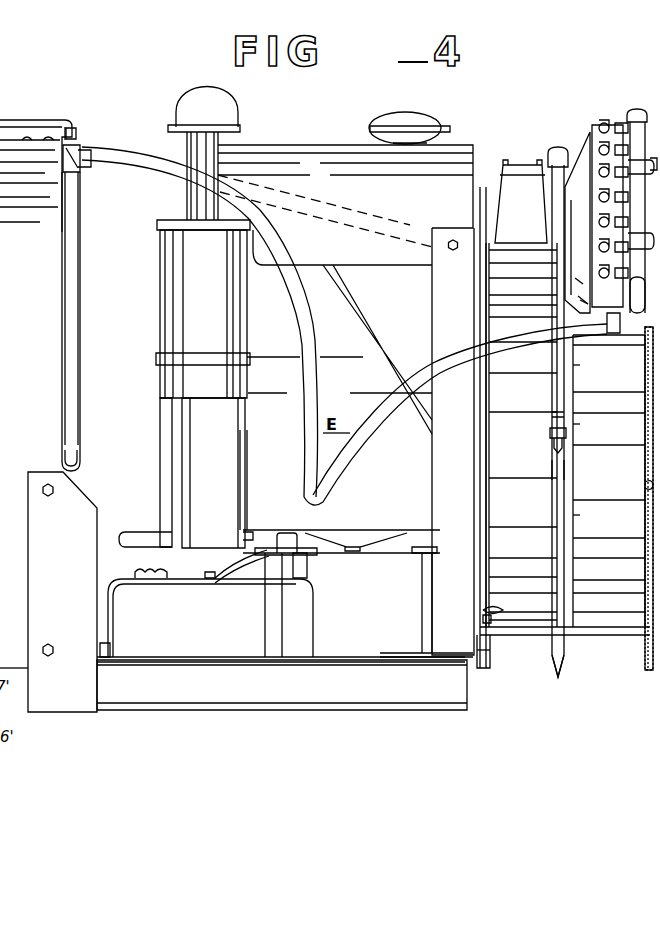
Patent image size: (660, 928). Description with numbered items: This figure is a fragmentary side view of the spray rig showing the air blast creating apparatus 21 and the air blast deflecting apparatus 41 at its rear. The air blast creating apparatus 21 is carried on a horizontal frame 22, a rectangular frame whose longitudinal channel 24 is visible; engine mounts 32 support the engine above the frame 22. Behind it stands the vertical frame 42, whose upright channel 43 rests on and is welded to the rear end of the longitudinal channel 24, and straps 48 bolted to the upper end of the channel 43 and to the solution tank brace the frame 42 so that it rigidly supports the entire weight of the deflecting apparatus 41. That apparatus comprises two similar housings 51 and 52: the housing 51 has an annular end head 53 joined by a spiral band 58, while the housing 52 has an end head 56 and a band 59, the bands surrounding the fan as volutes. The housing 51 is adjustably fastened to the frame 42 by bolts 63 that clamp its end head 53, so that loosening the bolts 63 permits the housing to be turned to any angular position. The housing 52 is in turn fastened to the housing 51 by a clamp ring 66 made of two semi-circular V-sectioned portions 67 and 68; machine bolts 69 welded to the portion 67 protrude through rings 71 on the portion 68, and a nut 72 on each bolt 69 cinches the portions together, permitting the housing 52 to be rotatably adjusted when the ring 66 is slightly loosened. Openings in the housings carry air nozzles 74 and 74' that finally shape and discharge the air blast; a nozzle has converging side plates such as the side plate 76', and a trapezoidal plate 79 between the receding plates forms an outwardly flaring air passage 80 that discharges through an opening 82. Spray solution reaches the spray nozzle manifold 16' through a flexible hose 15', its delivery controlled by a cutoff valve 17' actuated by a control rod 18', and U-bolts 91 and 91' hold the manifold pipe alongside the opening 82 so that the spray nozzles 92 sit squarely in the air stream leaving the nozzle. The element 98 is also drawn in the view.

The flexible hose 15' is at (455, 422).
The spray nozzle manifold 16' is at (625, 92).
The cutoff valve 17' is at (97, 178).
The control rod 18' is at (36, 160).
The air blast creating apparatus 21 is at (527, 113).
The horizontal frame 22 is at (225, 712).
The longitudinal channel 24 is at (258, 689).
The engine mount 32 is at (433, 588).
The air blast deflecting, shaping and discharging apparatus 41 is at (543, 662).
The vertical frame 42 is at (452, 643).
The upright channel 43 is at (467, 497).
The strap 48 is at (110, 148).
The housing 51 is at (520, 158).
The housing 52 is at (570, 145).
The annular end head 53 is at (480, 660).
The annular end head 56 is at (642, 705).
The band 58 is at (523, 412).
The band 59 is at (616, 411).
The bolt 63 is at (497, 228).
The clamp ring 66 is at (577, 470).
The semi-circular ring portion 67 is at (572, 365).
The semi-circular ring portion 68 is at (573, 515).
The machine bolt 69 is at (575, 424).
The ring 71 is at (555, 437).
The nut 72 is at (556, 448).
The air nozzle 74 is at (517, 184).
The air nozzle 74' is at (545, 291).
The side plate 76' is at (540, 311).
The trapezoidal plate 79 is at (532, 211).
The air passage 80 is at (583, 300).
The opening 82 is at (640, 322).
The U-bolt 91 is at (582, 173).
The U-bolt 91' is at (38, 440).
The spray nozzle 92 is at (597, 248).
The pipe 98 is at (648, 485).